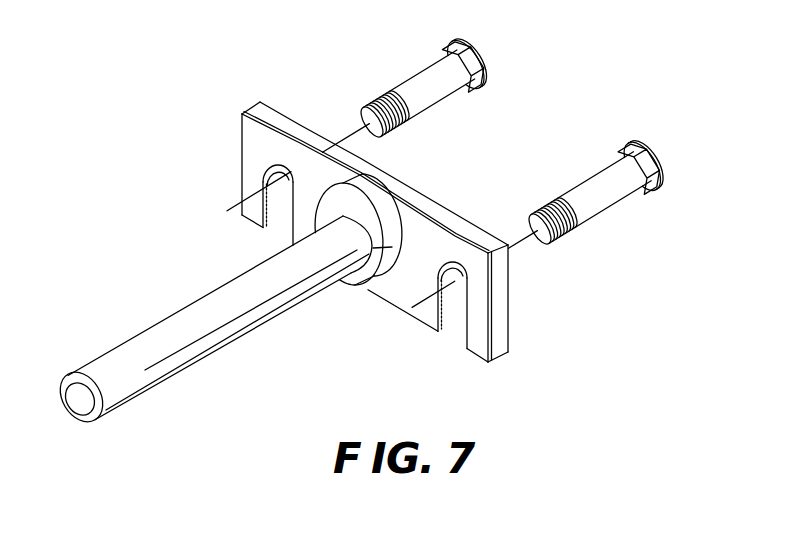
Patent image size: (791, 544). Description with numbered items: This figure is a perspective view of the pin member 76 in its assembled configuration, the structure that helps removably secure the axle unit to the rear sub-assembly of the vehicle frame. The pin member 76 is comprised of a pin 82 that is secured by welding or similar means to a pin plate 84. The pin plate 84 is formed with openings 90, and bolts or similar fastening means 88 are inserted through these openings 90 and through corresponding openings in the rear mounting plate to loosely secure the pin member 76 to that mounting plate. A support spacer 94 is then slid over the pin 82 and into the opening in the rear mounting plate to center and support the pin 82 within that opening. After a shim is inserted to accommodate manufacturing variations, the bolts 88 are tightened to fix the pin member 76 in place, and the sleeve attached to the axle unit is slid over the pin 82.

The pin member 76 is at (177, 235).
The pin 82 is at (143, 332).
The pin plate 84 is at (433, 194).
The bolts 88 is at (483, 52).
The openings 90 is at (284, 186).
The support spacer 94 is at (478, 354).